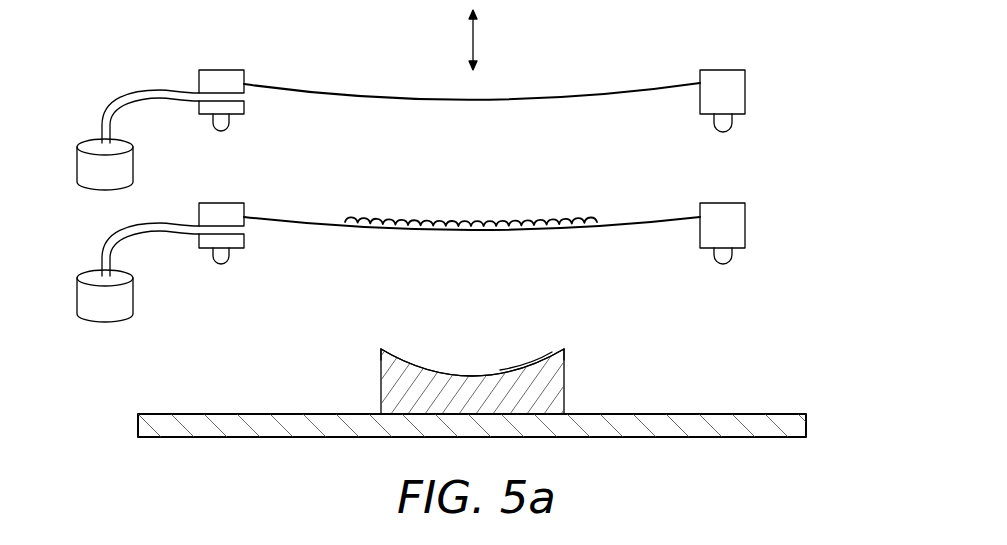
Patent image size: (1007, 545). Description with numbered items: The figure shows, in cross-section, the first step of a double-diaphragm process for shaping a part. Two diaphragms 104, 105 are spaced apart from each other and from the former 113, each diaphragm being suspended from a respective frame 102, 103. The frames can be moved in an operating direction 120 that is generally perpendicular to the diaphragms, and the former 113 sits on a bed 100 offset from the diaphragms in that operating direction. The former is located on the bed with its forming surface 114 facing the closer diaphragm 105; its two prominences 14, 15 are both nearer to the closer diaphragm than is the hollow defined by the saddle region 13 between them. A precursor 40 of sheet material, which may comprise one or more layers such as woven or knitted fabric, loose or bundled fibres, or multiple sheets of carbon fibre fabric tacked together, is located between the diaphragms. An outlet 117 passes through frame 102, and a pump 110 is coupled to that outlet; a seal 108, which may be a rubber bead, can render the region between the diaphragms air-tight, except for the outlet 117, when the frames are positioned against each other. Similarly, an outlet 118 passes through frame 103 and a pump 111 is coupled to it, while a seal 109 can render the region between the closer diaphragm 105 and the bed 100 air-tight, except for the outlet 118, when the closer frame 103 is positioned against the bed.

The bed 100 is at (778, 437).
The frame 102 is at (219, 70).
The frame 103 is at (219, 203).
The diaphragm 104 is at (655, 85).
The diaphragm 105 is at (655, 218).
The seal 108 is at (232, 125).
The seal 109 is at (232, 258).
The pump 110 is at (133, 175).
The pump 111 is at (133, 305).
The former 113 is at (564, 378).
The forming surface 114 is at (532, 362).
The outlet 117 is at (243, 97).
The outlet 118 is at (243, 230).
The operating direction 120 is at (473, 38).
The saddle region 13 is at (470, 366).
The prominence 14 is at (380, 348).
The prominence 15 is at (565, 348).
The precursor 40 is at (550, 212).